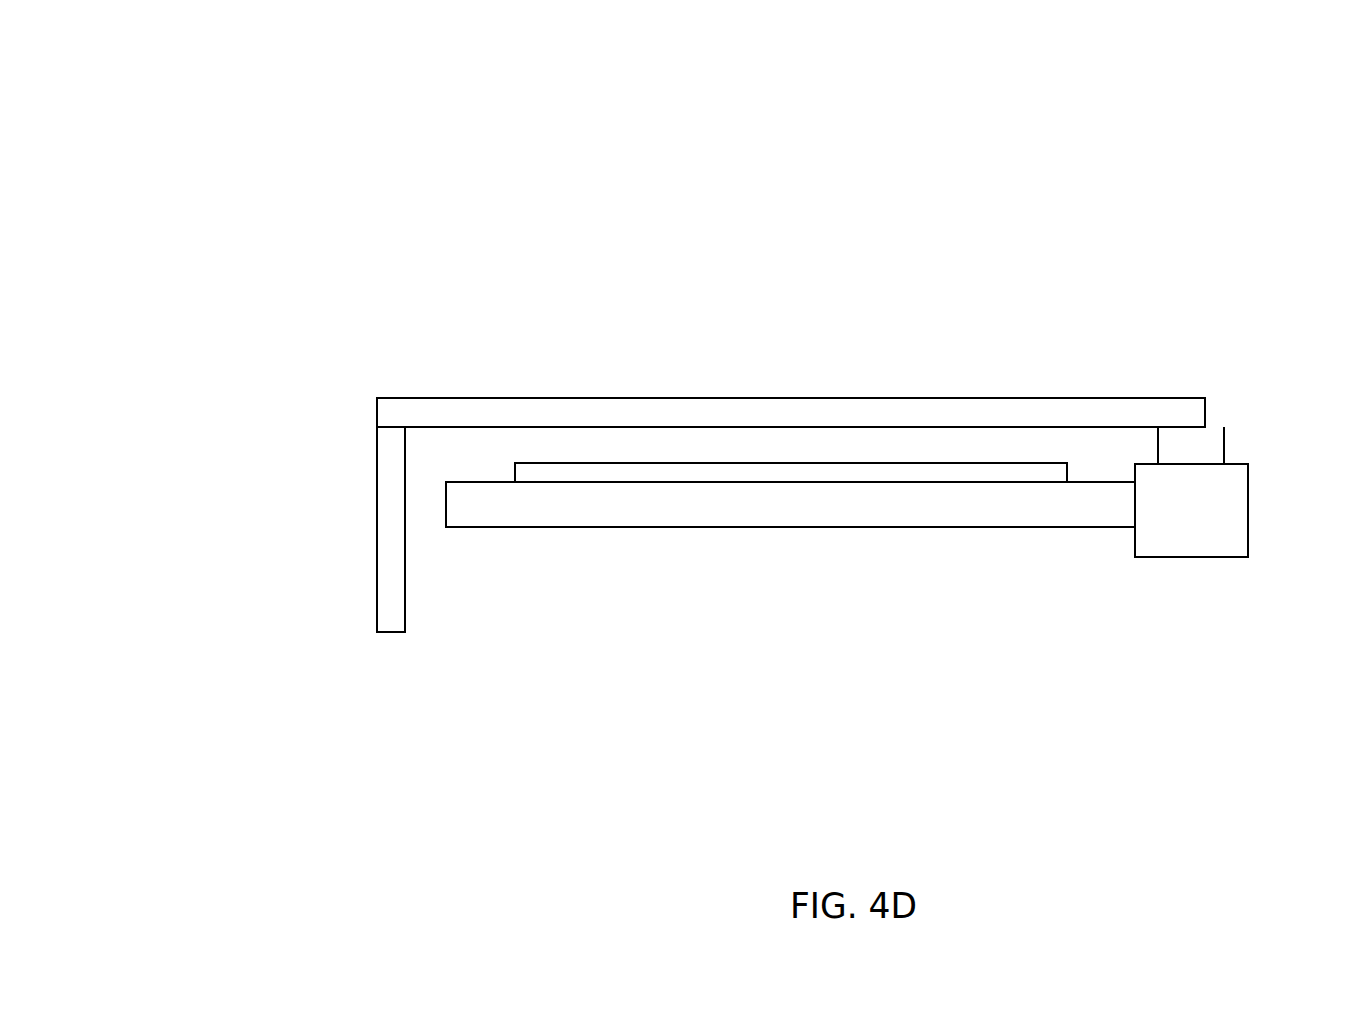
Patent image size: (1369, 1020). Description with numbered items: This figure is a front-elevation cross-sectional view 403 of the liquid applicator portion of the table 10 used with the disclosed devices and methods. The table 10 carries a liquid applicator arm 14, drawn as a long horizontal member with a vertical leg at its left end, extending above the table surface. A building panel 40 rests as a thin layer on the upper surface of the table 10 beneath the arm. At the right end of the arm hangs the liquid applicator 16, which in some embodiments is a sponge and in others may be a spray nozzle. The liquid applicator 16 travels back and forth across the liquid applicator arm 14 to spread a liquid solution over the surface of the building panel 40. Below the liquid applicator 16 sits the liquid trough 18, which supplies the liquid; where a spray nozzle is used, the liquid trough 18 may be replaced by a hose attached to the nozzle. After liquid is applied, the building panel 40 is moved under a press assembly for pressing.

The front-elevation cross-sectional view 403 is at (252, 88).
The liquid applicator arm 14 is at (400, 398).
The table 10 is at (537, 528).
The building panel 40 is at (982, 476).
The liquid applicator 16 is at (1224, 427).
The liquid trough 18 is at (1248, 505).